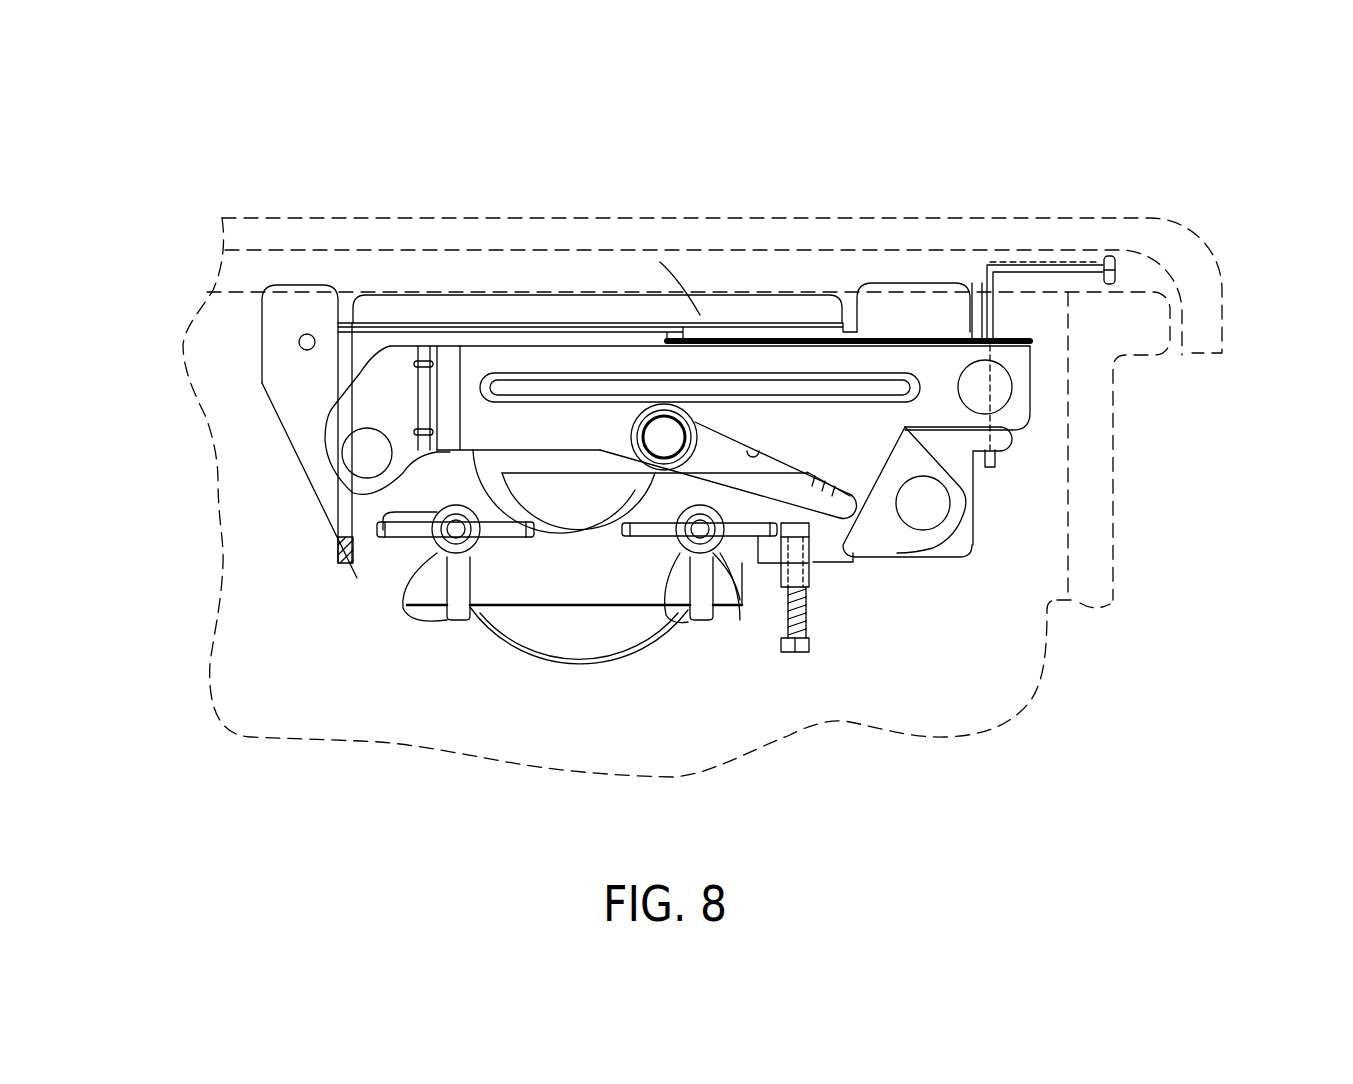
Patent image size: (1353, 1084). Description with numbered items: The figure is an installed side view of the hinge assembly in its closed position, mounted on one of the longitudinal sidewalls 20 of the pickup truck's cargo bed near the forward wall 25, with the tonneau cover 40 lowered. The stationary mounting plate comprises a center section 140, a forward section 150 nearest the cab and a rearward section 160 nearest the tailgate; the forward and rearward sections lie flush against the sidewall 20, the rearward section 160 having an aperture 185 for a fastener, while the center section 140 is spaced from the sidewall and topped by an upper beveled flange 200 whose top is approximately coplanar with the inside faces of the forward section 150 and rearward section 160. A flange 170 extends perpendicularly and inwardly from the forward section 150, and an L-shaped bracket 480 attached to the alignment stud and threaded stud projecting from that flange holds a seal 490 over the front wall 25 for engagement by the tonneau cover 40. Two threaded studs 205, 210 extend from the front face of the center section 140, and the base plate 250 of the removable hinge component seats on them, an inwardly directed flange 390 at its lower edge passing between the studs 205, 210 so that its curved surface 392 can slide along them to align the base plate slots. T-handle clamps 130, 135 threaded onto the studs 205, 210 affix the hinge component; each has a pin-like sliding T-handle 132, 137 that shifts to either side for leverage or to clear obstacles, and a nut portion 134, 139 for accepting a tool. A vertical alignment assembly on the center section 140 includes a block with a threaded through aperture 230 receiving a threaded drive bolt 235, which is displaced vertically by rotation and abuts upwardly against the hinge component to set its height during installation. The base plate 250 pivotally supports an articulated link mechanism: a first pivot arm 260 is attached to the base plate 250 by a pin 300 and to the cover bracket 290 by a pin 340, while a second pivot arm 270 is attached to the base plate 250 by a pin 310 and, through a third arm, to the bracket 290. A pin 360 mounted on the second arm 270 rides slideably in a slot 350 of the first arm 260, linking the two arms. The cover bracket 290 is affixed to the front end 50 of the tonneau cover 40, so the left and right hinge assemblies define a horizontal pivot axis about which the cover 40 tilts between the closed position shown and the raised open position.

The sidewall 20 is at (242, 470).
The forward wall 25 is at (1090, 430).
The tonneau cover 40 is at (1087, 248).
The front end 50 is at (1215, 350).
The T-handle clamp 130 is at (692, 590).
The sliding T-handle 132 is at (655, 545).
The nut portion 134 is at (716, 552).
The T-handle clamp 135 is at (447, 590).
The sliding T-handle 137 is at (450, 587).
The nut portion 139 is at (433, 537).
The center section 140 is at (510, 337).
The forward section 150 is at (878, 307).
The rearward section 160 is at (293, 308).
The flange 170 is at (950, 307).
The aperture 185 is at (300, 343).
The upper beveled flange 200 is at (464, 316).
The threaded stud 205 is at (675, 565).
The threaded stud 210 is at (440, 547).
The threaded through aperture 230 is at (809, 571).
The threaded drive bolt 235 is at (808, 625).
The base plate 250 is at (643, 474).
The first pivot arm 260 is at (578, 355).
The second pivot arm 270 is at (887, 510).
The cover bracket 290 is at (1017, 347).
The pin 300 is at (368, 453).
The pin 310 is at (923, 503).
The pin 340 is at (993, 395).
The slot 350 is at (767, 452).
The pin 360 is at (655, 470).
The flange 390 is at (557, 637).
The curved surface 392 is at (593, 667).
The L-shaped bracket 480 is at (1075, 218).
The seal 490 is at (1120, 285).